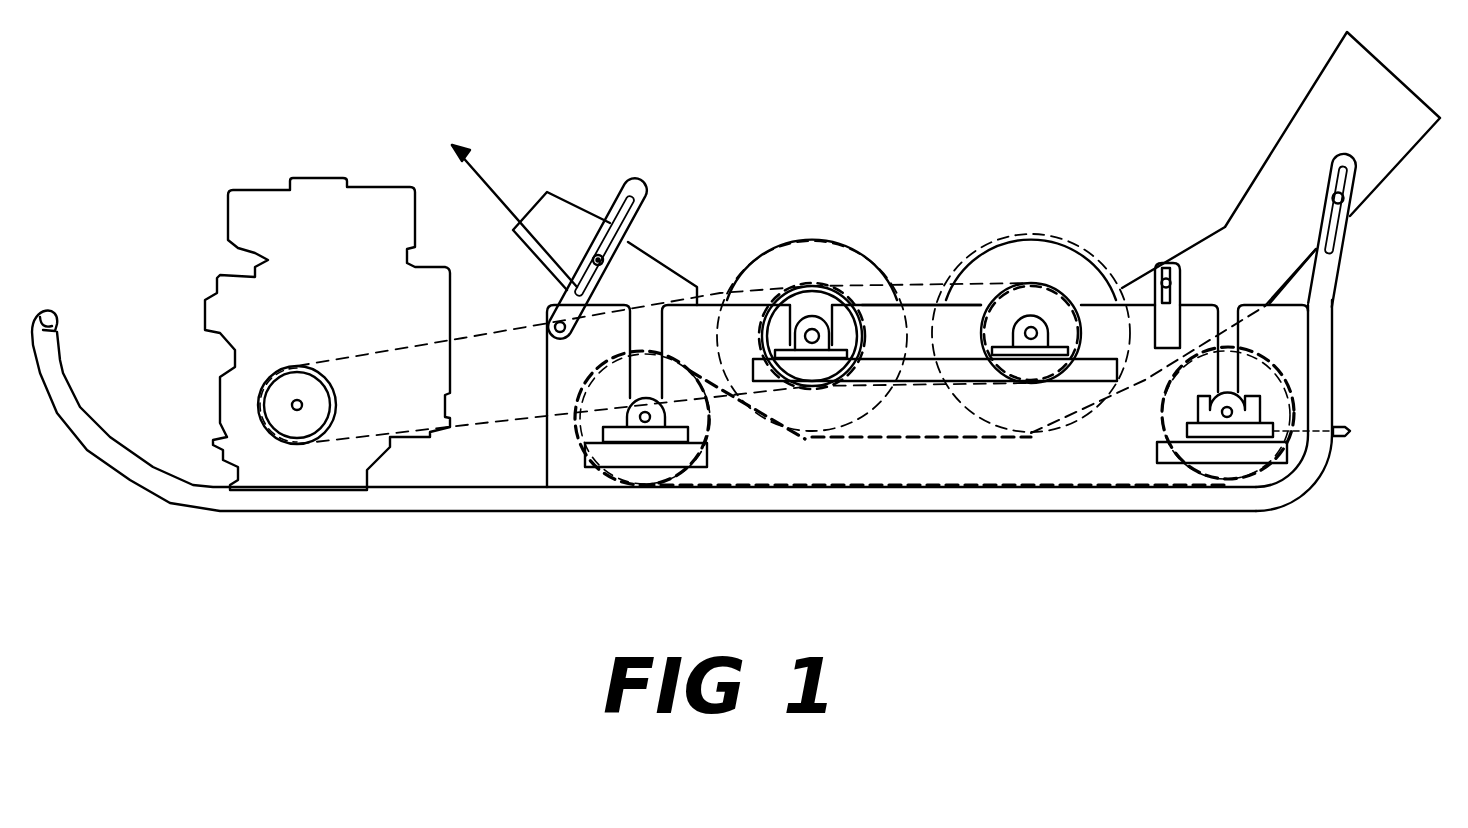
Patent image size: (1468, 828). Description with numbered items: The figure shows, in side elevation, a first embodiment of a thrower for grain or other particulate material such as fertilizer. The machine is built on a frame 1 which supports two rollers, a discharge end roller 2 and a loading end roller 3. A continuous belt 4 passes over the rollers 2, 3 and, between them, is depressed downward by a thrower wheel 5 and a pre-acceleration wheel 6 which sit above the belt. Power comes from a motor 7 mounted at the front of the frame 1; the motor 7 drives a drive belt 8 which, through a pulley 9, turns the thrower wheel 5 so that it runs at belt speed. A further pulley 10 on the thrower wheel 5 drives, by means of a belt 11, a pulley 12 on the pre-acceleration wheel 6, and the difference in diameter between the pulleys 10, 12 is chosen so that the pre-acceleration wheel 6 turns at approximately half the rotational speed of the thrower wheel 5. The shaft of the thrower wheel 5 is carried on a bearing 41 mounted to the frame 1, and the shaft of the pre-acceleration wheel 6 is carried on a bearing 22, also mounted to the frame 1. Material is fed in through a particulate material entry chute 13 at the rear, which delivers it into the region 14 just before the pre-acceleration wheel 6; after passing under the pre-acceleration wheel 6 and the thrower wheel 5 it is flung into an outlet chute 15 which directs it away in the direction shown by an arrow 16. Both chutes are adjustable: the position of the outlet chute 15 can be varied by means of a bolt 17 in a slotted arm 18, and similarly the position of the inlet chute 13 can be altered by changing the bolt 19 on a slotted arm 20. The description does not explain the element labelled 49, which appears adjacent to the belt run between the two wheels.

The frame 1 is at (515, 508).
The discharge end roller 2 is at (632, 470).
The loading end roller 3 is at (1227, 453).
The continuous belt 4 is at (913, 437).
The thrower wheel 5 is at (772, 247).
The pre-acceleration wheel 6 is at (1000, 243).
The motor 7 is at (250, 205).
The drive belt 8 is at (502, 328).
The pulley 9 is at (840, 287).
The further pulley 10 is at (785, 320).
The belt 11 is at (913, 292).
The pulley 12 is at (1060, 310).
The particulate material entry chute 13 is at (1270, 178).
The region 14 is at (1143, 373).
The outlet chute 15 is at (577, 217).
The arrow 16 is at (518, 190).
The bolt 17 is at (627, 243).
The slotted arm 18 is at (632, 207).
The bolt 19 is at (1345, 200).
The slotted arm 20 is at (1340, 237).
The bearing 22 is at (1045, 320).
The bearing 41 is at (807, 350).
The rail 49 is at (935, 305).